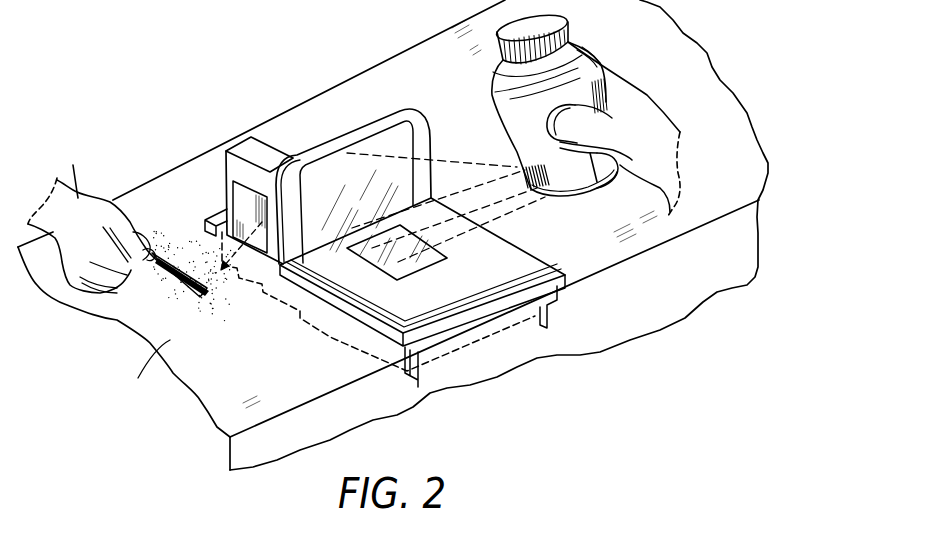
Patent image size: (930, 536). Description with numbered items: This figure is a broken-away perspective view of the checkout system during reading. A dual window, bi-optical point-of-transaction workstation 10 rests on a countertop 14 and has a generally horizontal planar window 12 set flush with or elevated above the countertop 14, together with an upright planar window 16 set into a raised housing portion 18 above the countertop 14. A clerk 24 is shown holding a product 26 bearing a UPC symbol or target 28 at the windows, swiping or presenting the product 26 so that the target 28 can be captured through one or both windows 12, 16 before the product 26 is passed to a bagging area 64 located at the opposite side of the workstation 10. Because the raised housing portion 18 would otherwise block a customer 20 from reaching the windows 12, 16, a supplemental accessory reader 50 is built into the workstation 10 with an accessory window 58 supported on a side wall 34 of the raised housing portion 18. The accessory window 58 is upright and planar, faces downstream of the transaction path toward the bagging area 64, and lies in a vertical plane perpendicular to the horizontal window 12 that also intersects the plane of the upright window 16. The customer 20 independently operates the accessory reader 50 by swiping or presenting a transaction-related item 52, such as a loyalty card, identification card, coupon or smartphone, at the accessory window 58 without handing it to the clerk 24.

The point-of-transaction workstation 10 is at (398, 100).
The horizontal planar window 12 is at (411, 271).
The countertop 14 is at (583, 268).
The upright planar window 16 is at (396, 158).
The raised housing portion 18 is at (423, 138).
The customer 20 is at (74, 170).
The clerk 24 is at (661, 128).
The product 26 is at (573, 117).
The UPC symbol / target 28 is at (580, 194).
The side wall 34 is at (229, 208).
The accessory reader 50 is at (235, 178).
The transaction-related item 52 is at (201, 298).
The accessory window 58 is at (238, 203).
The bagging area 64 is at (121, 395).